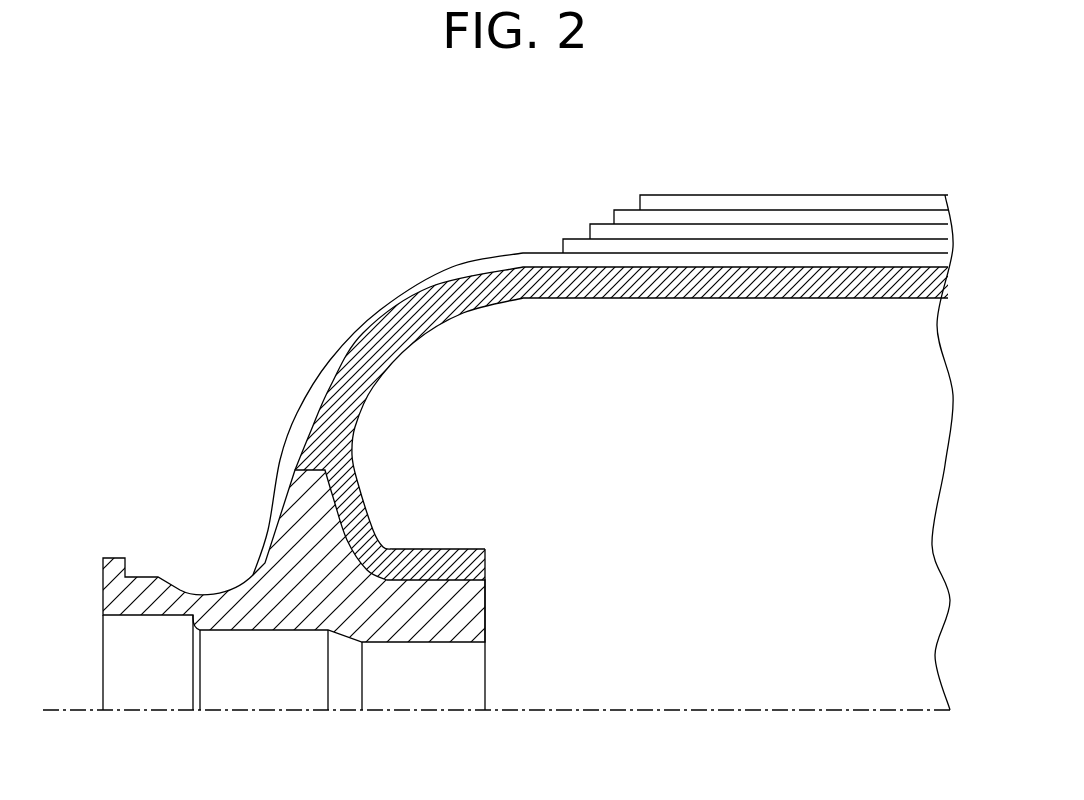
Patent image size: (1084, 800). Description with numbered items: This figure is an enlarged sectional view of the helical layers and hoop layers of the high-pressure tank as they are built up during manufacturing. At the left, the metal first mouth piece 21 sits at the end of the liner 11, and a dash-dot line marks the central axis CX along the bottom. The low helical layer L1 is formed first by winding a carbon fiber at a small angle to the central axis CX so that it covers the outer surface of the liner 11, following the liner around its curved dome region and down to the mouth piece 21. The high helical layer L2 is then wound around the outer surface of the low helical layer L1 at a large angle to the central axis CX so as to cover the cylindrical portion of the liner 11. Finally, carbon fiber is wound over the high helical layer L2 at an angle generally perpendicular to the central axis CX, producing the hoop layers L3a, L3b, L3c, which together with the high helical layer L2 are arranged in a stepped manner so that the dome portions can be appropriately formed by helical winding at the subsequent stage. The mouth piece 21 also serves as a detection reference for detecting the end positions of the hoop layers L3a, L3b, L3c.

The liner 11 is at (758, 280).
The first mouth piece 21 is at (178, 600).
The low helical layer L1 is at (452, 272).
The high helical layer L2 is at (576, 243).
The hoop layer L3a is at (692, 230).
The hoop layer L3b is at (783, 217).
The hoop layer L3c is at (860, 208).
The central axis CX is at (68, 707).